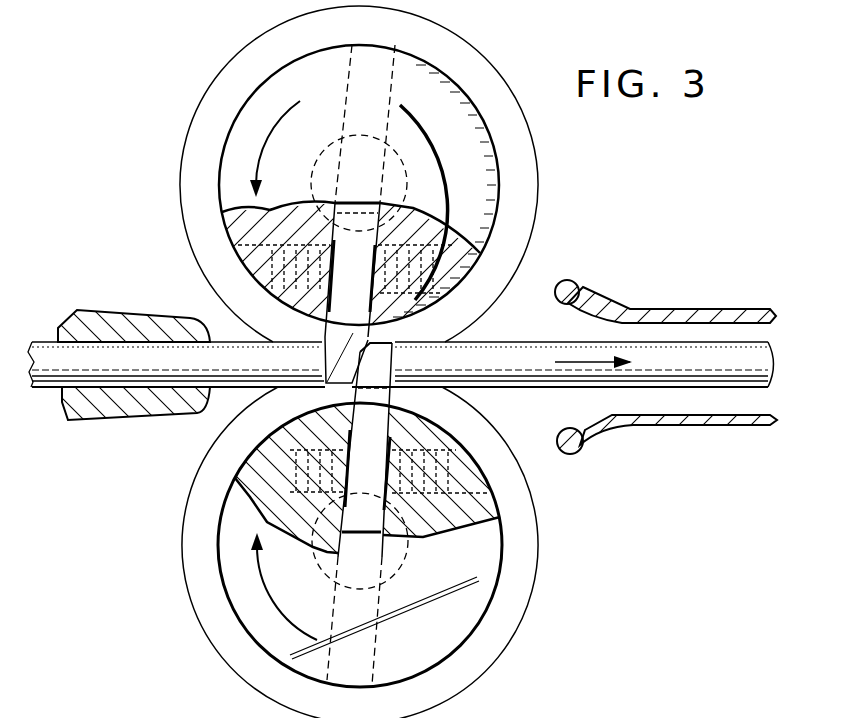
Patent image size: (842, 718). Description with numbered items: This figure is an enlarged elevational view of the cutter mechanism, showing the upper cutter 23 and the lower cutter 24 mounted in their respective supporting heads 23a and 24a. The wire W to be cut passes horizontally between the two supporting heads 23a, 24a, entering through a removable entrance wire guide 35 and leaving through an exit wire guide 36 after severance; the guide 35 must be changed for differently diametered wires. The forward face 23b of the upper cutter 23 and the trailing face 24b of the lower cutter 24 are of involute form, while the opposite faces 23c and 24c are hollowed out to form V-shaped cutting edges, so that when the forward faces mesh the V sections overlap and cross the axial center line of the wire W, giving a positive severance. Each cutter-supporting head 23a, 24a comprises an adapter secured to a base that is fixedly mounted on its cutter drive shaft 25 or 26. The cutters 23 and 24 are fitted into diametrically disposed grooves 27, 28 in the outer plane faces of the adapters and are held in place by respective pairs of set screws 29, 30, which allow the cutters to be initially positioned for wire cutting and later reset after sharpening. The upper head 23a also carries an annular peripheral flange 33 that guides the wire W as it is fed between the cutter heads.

The upper cutter 23 is at (322, 324).
The upper cutter-supporting head 23a is at (487, 163).
The forward face of upper cutter 23b is at (408, 209).
The opposite face of upper cutter 23c is at (318, 350).
The lower cutter 24 is at (195, 624).
The lower cutter-supporting head 24a is at (452, 443).
The trailing face of lower cutter 24b is at (400, 352).
The opposite face of lower cutter 24c is at (398, 392).
The cutter drive shaft 25 is at (401, 153).
The cutter drive shaft 26 is at (404, 566).
The groove 27 is at (388, 100).
The groove 28 is at (380, 627).
The set screws 29 is at (440, 228).
The set screws 30 is at (275, 514).
The annular peripheral flange 33 is at (184, 157).
The entrance wire guide 35 is at (142, 302).
The exit wire guide 36 is at (688, 420).
The wire W is at (538, 336).